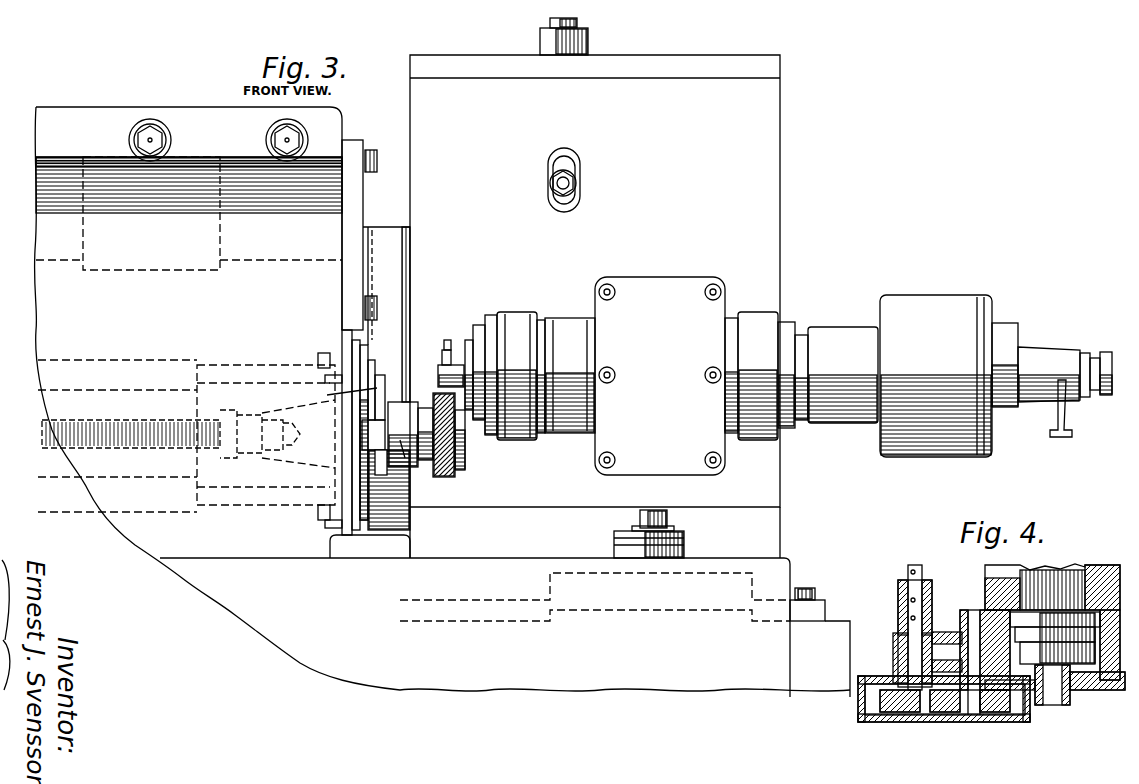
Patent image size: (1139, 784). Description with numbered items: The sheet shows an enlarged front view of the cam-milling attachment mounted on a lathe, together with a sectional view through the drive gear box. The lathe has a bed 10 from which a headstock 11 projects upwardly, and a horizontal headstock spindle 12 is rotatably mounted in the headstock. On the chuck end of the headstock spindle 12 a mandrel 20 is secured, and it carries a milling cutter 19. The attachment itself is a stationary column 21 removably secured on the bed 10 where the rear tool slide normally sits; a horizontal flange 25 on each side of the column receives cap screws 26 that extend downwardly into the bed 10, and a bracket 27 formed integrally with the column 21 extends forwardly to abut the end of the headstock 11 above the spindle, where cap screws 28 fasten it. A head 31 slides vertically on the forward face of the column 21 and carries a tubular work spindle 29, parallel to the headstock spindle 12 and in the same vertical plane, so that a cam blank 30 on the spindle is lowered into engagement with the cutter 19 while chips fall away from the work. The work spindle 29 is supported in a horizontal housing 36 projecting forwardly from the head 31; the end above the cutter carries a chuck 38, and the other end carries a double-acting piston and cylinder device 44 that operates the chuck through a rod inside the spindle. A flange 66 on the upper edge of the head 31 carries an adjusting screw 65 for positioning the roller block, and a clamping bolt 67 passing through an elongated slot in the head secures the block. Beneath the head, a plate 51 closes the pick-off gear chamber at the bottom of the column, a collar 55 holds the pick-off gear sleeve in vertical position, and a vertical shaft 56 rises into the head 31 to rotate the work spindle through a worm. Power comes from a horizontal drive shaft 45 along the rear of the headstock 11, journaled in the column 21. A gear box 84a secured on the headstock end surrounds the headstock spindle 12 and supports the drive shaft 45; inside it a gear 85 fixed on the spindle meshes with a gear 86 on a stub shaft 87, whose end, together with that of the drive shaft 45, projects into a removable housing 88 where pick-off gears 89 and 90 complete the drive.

In FIG. 3, the bed 10 is at (835, 621).
In FIG. 3, the headstock 11 is at (196, 112).
In FIG. 3, the headstock spindle 12 is at (411, 505).
In FIG. 4, the headstock spindle 12 is at (1072, 575).
In FIG. 3, the milling cutter 19 is at (449, 477).
In FIG. 3, the mandrel 20 is at (425, 467).
In FIG. 3, the column 21 is at (772, 535).
In FIG. 3, the horizontal flange 25 is at (812, 600).
In FIG. 3, the cap screws 26 is at (806, 588).
In FIG. 3, the bracket 27 is at (352, 197).
In FIG. 3, the cap screws 28 is at (372, 151).
In FIG. 3, the work spindle 29 is at (490, 440).
In FIG. 3, the cam blank 30 is at (447, 340).
In FIG. 3, the head 31 is at (579, 281).
In FIG. 3, the horizontal housing 36 is at (571, 435).
In FIG. 3, the chuck 38 is at (452, 350).
In FIG. 3, the double-acting piston and cylinder device 44 is at (958, 457).
In FIG. 4, the drive shaft 45 is at (916, 566).
In FIG. 3, the plate 51 is at (653, 615).
In FIG. 3, the collar 55 is at (614, 538).
In FIG. 3, the vertical shaft 56 is at (668, 522).
In FIG. 3, the adjusting screw 65 is at (578, 24).
In FIG. 3, the flange 66 is at (706, 58).
In FIG. 3, the clamping bolt 67 is at (565, 183).
In FIG. 4, the gear box 84a is at (1085, 686).
In FIG. 4, the gear 85 is at (1057, 705).
In FIG. 4, the gear 86 is at (1015, 712).
In FIG. 4, the stub shaft 87 is at (974, 610).
In FIG. 4, the housing 88 is at (995, 722).
In FIG. 4, the pick-off gear 89 is at (893, 712).
In FIG. 4, the pick-off gear 90 is at (950, 712).